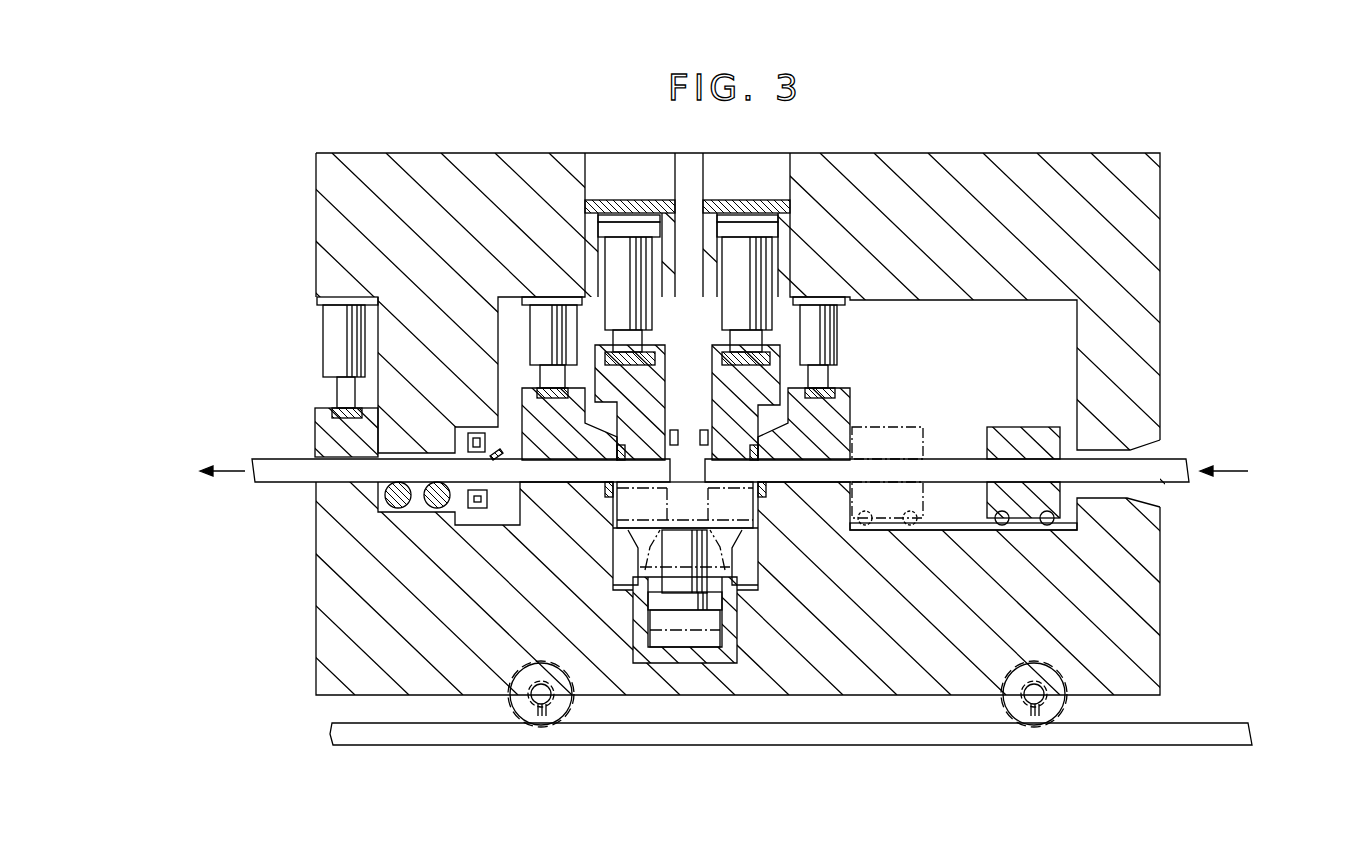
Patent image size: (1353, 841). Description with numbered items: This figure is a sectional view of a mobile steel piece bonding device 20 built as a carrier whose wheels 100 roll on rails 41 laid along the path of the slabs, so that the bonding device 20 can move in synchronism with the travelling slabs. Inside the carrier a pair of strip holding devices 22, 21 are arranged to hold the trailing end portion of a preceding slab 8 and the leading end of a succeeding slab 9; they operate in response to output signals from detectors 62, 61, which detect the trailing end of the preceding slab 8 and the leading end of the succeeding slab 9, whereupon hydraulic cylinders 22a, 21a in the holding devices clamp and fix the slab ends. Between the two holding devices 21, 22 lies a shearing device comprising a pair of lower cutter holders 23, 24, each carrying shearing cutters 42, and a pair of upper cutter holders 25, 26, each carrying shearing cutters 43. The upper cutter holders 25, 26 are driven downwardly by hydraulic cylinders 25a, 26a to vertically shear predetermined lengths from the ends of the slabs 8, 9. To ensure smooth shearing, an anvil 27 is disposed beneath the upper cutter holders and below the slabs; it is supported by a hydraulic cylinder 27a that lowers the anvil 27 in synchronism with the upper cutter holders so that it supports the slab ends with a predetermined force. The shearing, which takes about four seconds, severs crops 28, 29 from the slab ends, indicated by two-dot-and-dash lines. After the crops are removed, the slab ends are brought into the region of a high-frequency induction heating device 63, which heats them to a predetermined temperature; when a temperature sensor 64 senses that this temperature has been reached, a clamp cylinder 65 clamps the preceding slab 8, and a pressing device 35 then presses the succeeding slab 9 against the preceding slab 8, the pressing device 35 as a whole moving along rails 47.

The mobile bonding device 20 is at (1160, 185).
The clamp cylinder 65 is at (323, 333).
The strip holding device 22 is at (530, 397).
The hydraulic cylinder 22a is at (548, 330).
The upper cutter holder 26 is at (580, 357).
The hydraulic cylinder 26a is at (617, 257).
The detector 62 is at (672, 430).
The detector 61 is at (704, 430).
The hydraulic cylinder 25a is at (768, 255).
The upper cutter holder 25 is at (800, 358).
The hydraulic cylinder 21a is at (822, 332).
The strip holding device 21 is at (850, 408).
The pressing device 35 is at (1025, 427).
The rails 47 is at (960, 530).
The preceding slab 8 is at (406, 473).
The succeeding slab 9 is at (1172, 463).
The high-frequency heating device 63 is at (477, 433).
The temperature sensor 64 is at (497, 453).
The shearing cutters 43 is at (614, 451).
The shearing cutters 42 is at (604, 490).
The lower cutter holder 24 is at (606, 505).
The crop 29 is at (611, 550).
The crop 28 is at (763, 553).
The lower cutter holder 23 is at (762, 518).
The hydraulic cylinder 27a is at (728, 630).
The anvil 27 is at (638, 597).
The wheels 100 is at (525, 680).
The rails 41 is at (1205, 732).